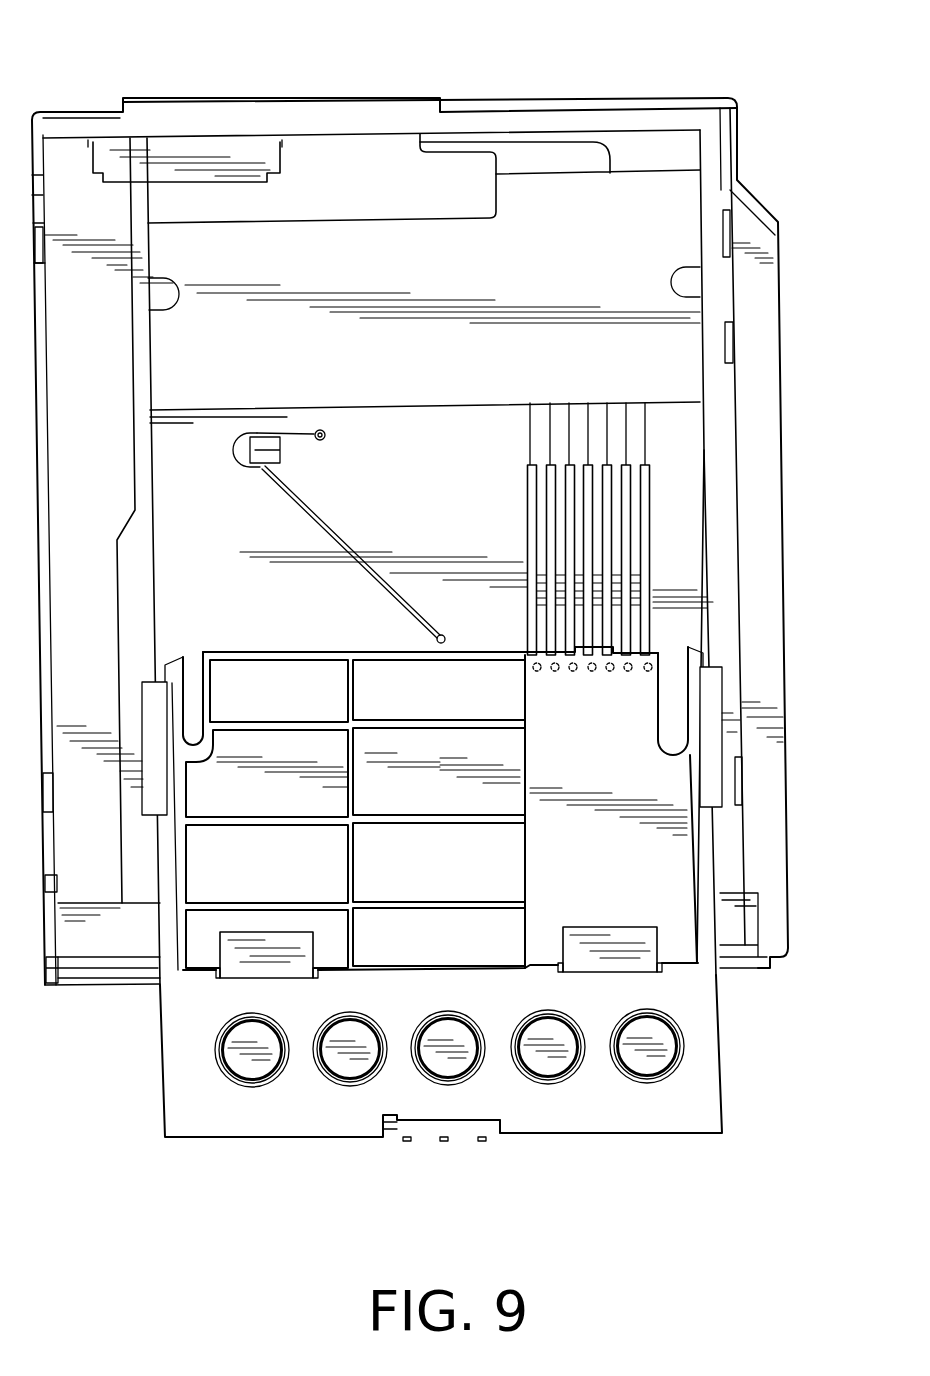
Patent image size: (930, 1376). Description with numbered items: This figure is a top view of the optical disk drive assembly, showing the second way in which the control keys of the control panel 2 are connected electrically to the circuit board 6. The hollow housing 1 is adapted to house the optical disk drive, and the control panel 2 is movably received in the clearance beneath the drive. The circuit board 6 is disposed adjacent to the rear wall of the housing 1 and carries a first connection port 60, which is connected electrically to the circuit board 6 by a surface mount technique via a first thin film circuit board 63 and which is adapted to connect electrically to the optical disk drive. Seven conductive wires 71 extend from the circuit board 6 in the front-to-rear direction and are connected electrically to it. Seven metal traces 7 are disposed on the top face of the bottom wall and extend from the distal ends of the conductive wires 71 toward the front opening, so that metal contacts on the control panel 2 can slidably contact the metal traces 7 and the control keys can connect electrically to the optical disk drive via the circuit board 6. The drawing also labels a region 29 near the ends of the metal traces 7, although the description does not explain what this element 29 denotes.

The hollow housing 1 is at (773, 160).
The control panel 2 is at (738, 1098).
The circuit board 6 is at (607, 200).
The first connection port 60 is at (186, 152).
The first thin film circuit board 63 is at (343, 180).
The metal traces 7 is at (653, 553).
The conductive wires 71 is at (530, 440).
The terminal receiving chamber 29 is at (590, 668).